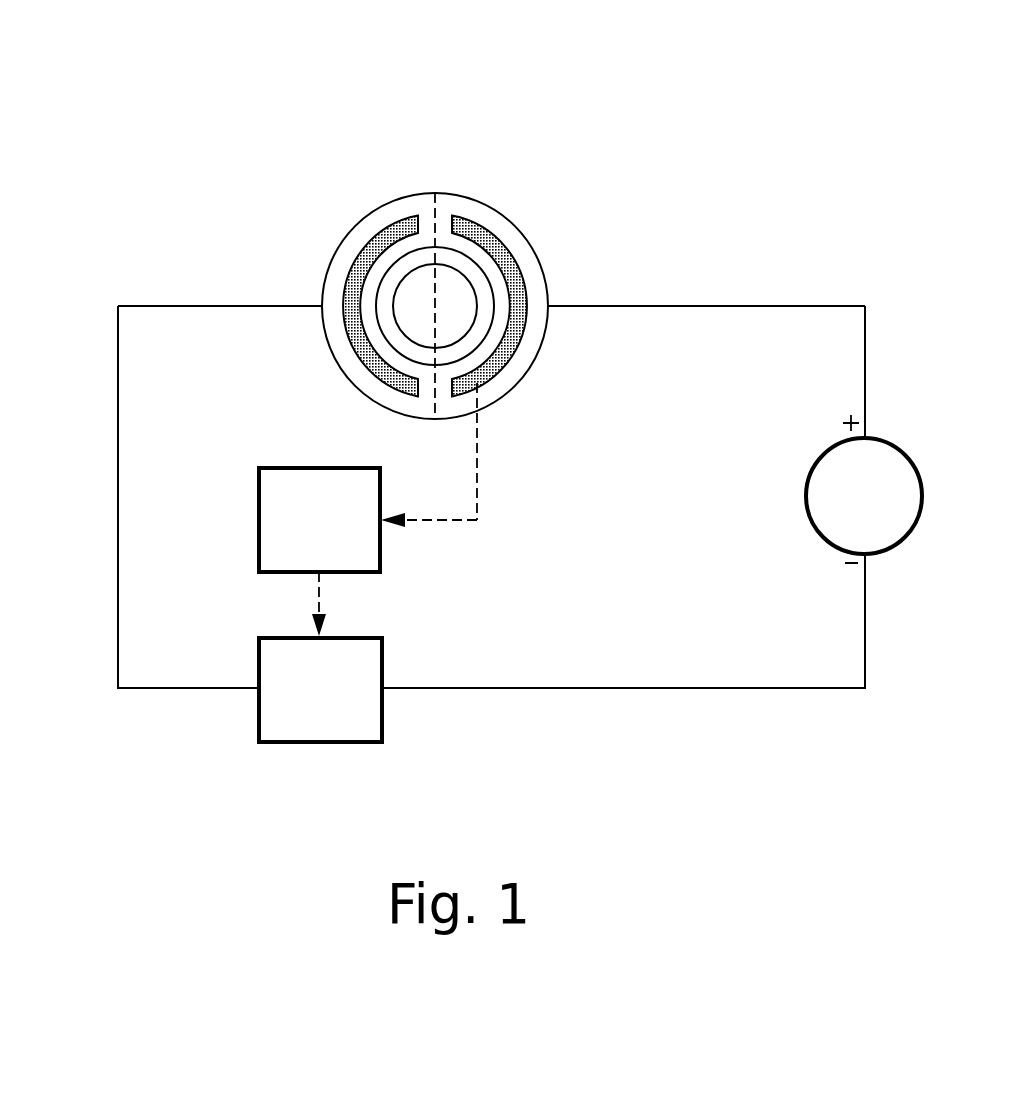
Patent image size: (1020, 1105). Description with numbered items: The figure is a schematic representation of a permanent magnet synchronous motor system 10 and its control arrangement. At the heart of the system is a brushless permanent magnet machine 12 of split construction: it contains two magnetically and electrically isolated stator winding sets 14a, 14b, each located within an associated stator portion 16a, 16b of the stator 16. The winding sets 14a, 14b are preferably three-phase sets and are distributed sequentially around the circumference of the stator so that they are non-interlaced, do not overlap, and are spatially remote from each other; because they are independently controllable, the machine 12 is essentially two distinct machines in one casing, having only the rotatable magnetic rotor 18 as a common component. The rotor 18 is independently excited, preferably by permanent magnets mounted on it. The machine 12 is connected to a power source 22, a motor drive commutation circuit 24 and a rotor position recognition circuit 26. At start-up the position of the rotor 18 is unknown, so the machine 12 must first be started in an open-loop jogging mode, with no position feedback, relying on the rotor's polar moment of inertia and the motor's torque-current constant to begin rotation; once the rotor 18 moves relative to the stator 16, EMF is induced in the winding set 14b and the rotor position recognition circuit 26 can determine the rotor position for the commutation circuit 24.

The permanent magnet synchronous motor system 10 is at (137, 775).
The brushless permanent magnet machine 12 is at (430, 280).
The stator winding set 14a is at (353, 266).
The stator winding set 14b is at (505, 242).
The stator 16 is at (476, 259).
The stator portion 16a is at (407, 208).
The stator portion 16b is at (463, 207).
The rotor 18 is at (462, 342).
The power source 22 is at (885, 513).
The motor drive commutation circuit 24 is at (340, 707).
The rotor position recognition circuit 26 is at (340, 537).